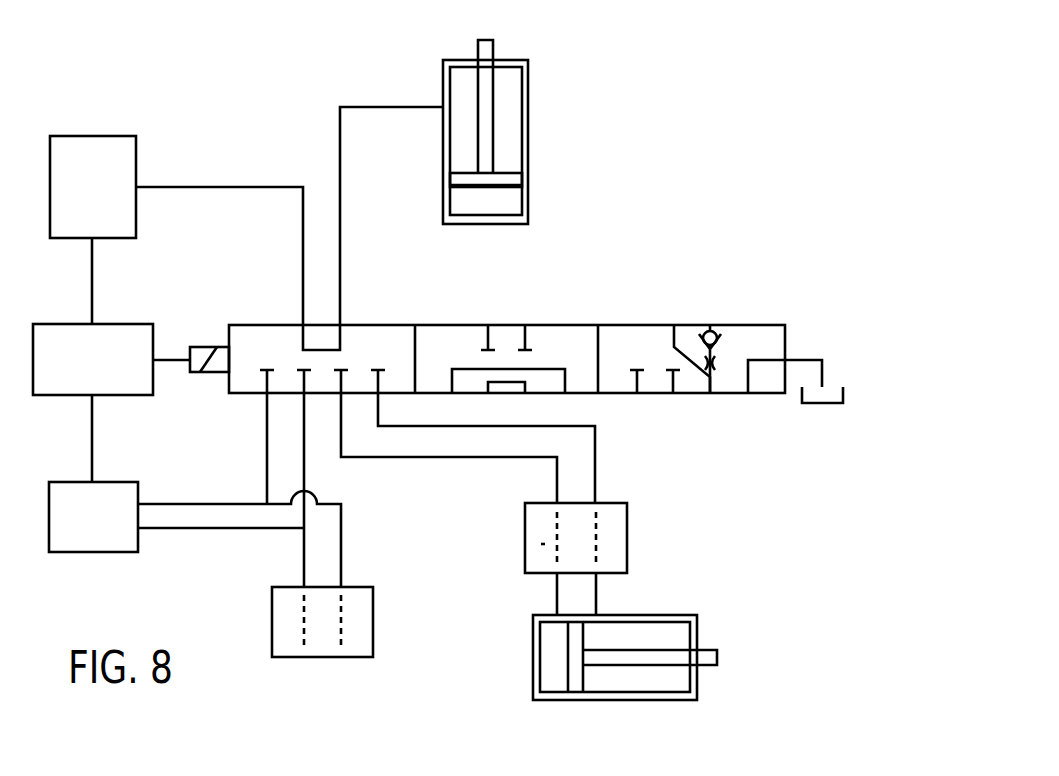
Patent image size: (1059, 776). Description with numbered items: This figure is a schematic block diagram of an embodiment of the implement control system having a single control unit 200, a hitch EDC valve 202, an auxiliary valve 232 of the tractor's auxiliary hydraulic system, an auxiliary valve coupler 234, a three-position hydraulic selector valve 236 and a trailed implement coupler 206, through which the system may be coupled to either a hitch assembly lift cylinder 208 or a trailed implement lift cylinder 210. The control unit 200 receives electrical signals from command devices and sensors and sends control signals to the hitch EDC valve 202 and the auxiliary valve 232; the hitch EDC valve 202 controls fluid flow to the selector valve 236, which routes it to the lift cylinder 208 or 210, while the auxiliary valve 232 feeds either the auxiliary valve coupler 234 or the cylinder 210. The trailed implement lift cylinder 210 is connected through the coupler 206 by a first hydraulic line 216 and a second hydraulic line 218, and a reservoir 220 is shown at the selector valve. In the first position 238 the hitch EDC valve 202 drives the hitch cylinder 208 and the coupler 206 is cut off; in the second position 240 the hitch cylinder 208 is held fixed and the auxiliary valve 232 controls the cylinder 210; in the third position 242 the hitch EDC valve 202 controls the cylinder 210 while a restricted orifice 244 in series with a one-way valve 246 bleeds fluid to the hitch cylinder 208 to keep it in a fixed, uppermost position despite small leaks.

The control unit 200 is at (63, 323).
The hitch EDC valve 202 is at (92, 135).
The trailed implement coupler 206 is at (628, 537).
The hitch assembly lift cylinder 208 is at (530, 100).
The trailed implement lift cylinder 210 is at (697, 617).
The first hydraulic line 216 is at (450, 458).
The second hydraulic line 218 is at (488, 426).
The reservoir 220 is at (845, 404).
The auxiliary valve 232 is at (117, 553).
The auxiliary valve coupler 234 is at (373, 640).
The three-position hydraulic selector valve 236 is at (529, 407).
The first position 238 is at (370, 323).
The second position 240 is at (556, 323).
The third position 242 is at (726, 351).
The restricted orifice 244 is at (716, 365).
The one-way valve 246 is at (704, 328).